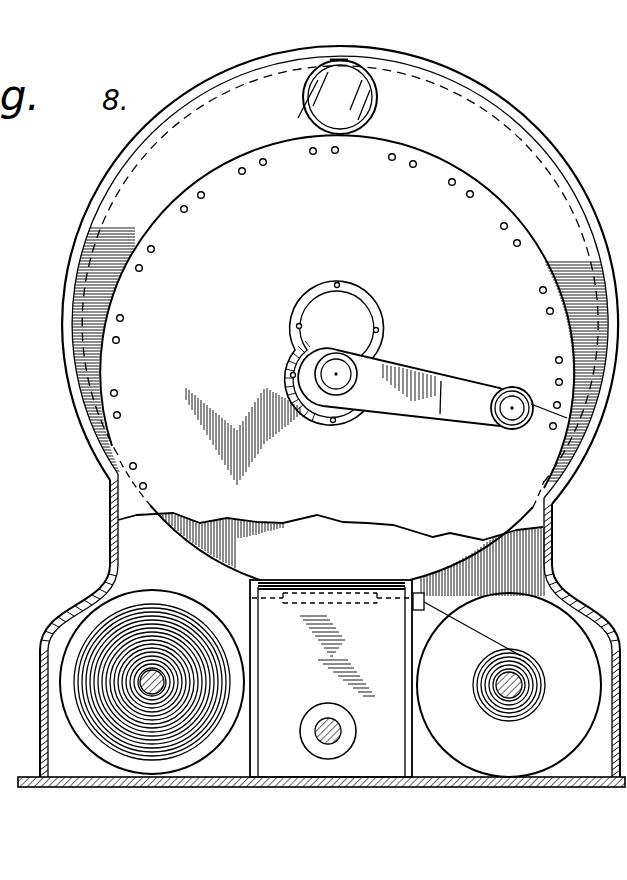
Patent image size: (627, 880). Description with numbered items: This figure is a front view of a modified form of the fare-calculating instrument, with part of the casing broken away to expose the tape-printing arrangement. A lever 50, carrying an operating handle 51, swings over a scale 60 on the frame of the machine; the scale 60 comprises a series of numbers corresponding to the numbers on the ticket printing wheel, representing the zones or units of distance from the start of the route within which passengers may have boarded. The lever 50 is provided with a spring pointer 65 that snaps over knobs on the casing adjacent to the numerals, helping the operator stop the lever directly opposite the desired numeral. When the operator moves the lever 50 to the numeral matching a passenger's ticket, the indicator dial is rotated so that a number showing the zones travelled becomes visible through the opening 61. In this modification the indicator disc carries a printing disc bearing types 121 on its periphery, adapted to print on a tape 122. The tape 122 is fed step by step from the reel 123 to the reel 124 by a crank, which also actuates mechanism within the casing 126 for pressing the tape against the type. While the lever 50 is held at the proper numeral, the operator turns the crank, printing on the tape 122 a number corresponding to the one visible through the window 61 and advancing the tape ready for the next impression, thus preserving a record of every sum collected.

The lever 50 is at (423, 372).
The operating handle 51 is at (505, 427).
The scale 60 is at (330, 195).
The opening 61 is at (302, 97).
The spring pointer 65 is at (549, 413).
The types 121 is at (108, 186).
The tape 122 is at (231, 606).
The reel 123 is at (98, 606).
The reel 124 is at (509, 685).
The casing 126 is at (331, 678).